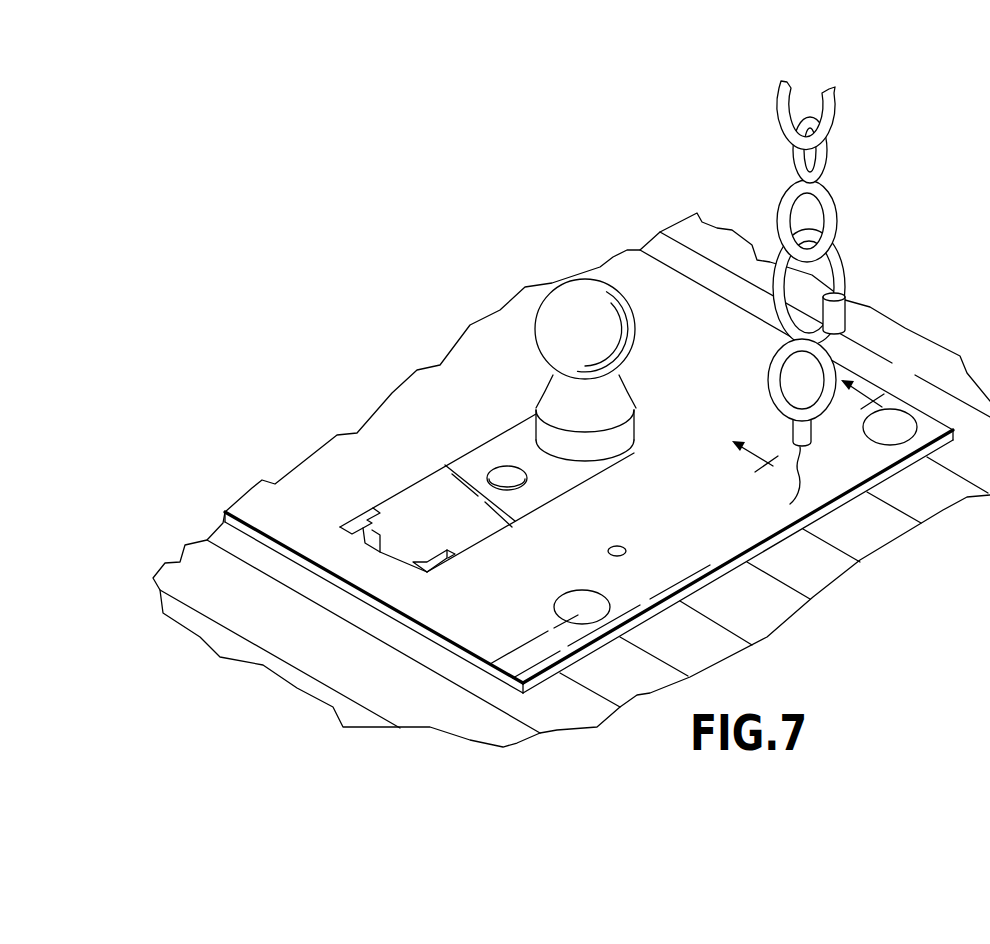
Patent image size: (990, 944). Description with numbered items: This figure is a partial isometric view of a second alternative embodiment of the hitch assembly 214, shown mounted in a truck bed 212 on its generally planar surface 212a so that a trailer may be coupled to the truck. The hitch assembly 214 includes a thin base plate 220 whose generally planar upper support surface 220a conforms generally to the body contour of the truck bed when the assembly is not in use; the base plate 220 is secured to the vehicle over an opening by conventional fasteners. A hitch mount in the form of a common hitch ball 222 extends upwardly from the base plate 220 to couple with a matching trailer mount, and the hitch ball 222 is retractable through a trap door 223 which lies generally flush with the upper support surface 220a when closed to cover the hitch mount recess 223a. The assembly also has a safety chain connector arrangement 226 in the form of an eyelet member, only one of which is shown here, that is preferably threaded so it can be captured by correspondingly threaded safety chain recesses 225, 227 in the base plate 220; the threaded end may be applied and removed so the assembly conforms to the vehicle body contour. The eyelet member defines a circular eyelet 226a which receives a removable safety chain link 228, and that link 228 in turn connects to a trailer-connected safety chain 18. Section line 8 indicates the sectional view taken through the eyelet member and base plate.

The safety chain 18 is at (776, 164).
The hitch ball 222 is at (578, 295).
The removable safety chain link 228 is at (846, 287).
The safety chain connector arrangement 226 is at (768, 378).
The eyelet 226a is at (778, 394).
The safety chain recess 227 is at (790, 504).
The base plate 220 is at (283, 500).
The upper support surface 220a is at (535, 374).
The trap door 223 is at (438, 489).
The hitch mount recess 223a is at (399, 484).
The safety chain recess 225 is at (614, 546).
The hitch assembly 214 is at (880, 463).
The truck bed 212 is at (253, 620).
The planar surface 212a is at (815, 568).
The section line 8- 8 is at (820, 428).